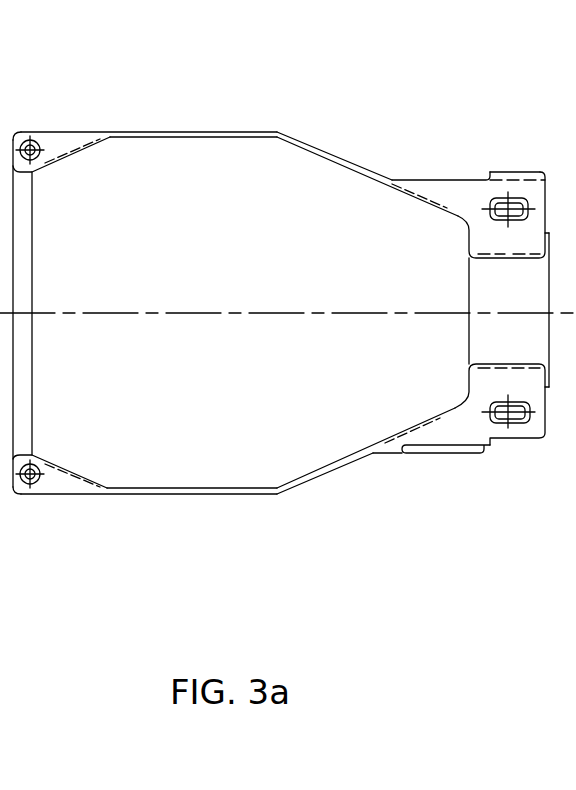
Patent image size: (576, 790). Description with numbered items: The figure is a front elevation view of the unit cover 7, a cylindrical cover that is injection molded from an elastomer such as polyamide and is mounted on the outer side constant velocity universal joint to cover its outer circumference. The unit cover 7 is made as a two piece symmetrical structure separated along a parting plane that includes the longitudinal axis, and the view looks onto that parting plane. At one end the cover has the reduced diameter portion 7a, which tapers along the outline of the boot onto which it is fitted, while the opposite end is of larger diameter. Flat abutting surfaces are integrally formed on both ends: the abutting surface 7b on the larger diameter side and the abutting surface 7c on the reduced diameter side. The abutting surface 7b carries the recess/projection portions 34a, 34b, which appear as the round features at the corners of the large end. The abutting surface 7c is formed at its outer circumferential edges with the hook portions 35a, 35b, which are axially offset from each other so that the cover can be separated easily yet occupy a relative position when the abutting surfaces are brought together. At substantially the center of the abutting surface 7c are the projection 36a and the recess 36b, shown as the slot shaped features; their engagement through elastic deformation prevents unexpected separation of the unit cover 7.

The unit cover 7 is at (227, 283).
The reduced diameter portion 7a is at (297, 148).
The abutting surface 7b is at (70, 132).
The abutting surface 7c is at (443, 182).
The recess/projection portion 34a is at (27, 137).
The recess/projection portion 34b is at (37, 496).
The hook portion 35a is at (533, 170).
The hook portion 35b is at (463, 455).
The projection 36a is at (505, 200).
The recess 36b is at (518, 430).